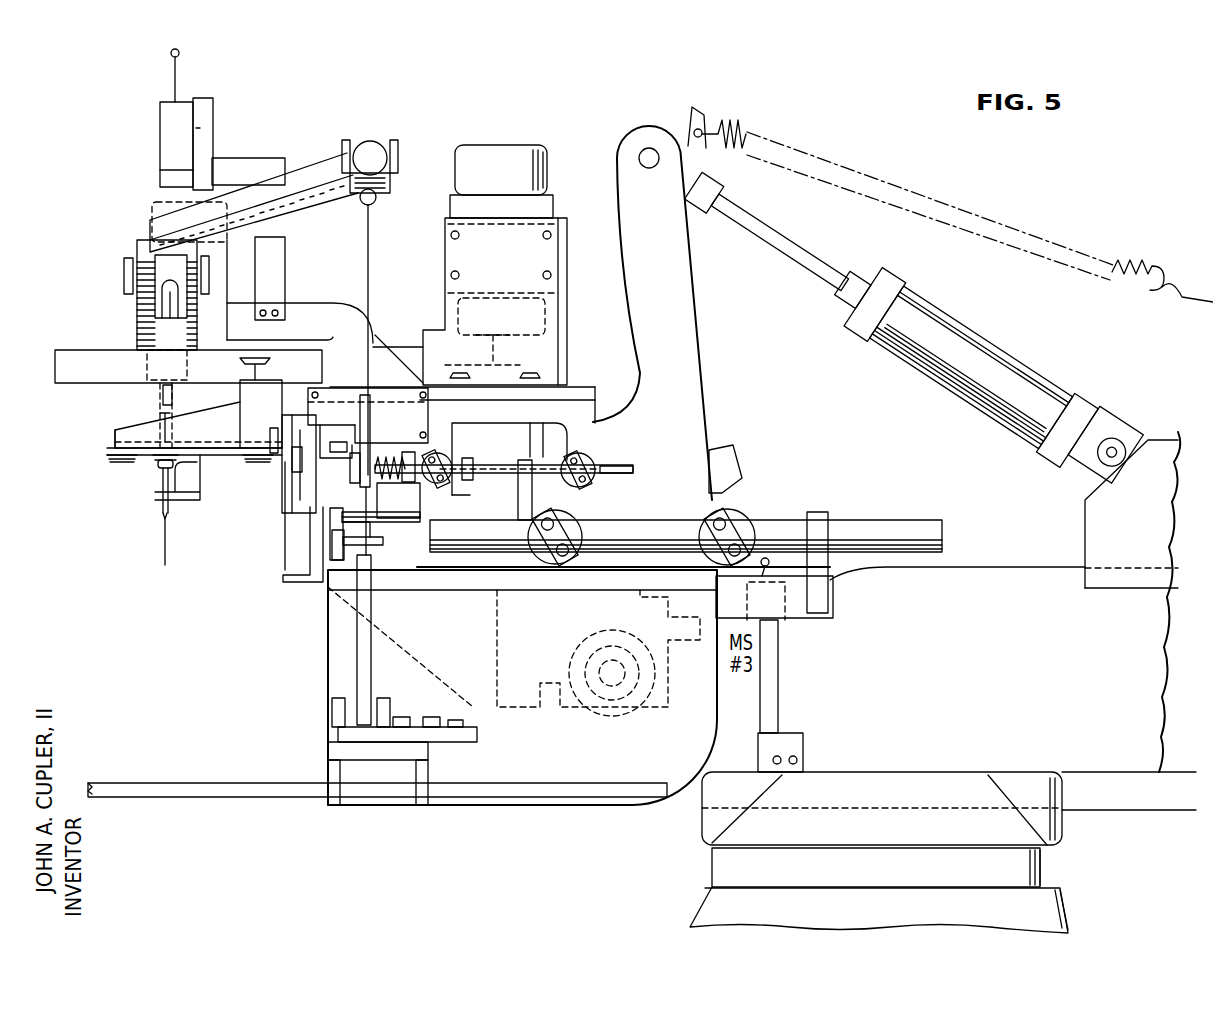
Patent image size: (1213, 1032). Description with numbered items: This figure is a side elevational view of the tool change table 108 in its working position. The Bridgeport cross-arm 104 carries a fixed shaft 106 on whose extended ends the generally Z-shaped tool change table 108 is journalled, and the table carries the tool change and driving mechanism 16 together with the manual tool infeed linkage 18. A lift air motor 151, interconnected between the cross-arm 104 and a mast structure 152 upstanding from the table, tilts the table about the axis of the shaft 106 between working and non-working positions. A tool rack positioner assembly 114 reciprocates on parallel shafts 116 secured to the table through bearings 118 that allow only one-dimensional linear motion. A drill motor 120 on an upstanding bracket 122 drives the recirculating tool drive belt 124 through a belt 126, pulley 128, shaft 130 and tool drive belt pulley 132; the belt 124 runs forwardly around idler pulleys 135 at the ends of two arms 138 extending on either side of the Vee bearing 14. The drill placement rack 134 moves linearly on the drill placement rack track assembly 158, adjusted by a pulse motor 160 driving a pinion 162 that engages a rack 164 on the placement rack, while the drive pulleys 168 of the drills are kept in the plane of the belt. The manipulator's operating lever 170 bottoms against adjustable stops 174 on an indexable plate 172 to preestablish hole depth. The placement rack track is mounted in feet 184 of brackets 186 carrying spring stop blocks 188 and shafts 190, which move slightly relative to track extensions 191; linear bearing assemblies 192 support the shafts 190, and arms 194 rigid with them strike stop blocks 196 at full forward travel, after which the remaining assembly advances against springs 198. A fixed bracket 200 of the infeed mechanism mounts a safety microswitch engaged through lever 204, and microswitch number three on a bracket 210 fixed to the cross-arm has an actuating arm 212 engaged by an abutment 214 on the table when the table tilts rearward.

The Vee bearing 14 is at (198, 488).
The tool change and driving mechanism 16 is at (65, 280).
The manual tool infeed linkage 18 is at (307, 143).
The Bridgeport cross-arm 104 is at (1005, 685).
The fixed shaft 106 is at (615, 667).
The tool change table 108 is at (475, 644).
The tool rack positioner assembly 114 is at (618, 483).
The parallel shafts 116 is at (868, 534).
The bearings 118 is at (563, 565).
The drill motor 120 is at (511, 151).
The bracket 122 is at (517, 263).
The recirculating tool drive belt 124 is at (223, 436).
The belt 126 is at (385, 354).
The pulley 128 is at (240, 364).
The shaft 130 is at (235, 382).
The tool drive belt pulley 132 is at (240, 460).
The drill placement rack 134 is at (298, 496).
The idler pulleys 135 is at (114, 460).
The arms 138 is at (123, 430).
The lift air motor 151 is at (1025, 352).
The mast structure 152 is at (620, 129).
The drill placement rack track assembly 158 is at (281, 587).
The pulse motor 160 is at (508, 457).
The pinion 162 is at (292, 472).
The rack 164 is at (368, 423).
The drive pulleys 168 is at (274, 442).
The operating lever 170 is at (373, 600).
The indexable plate 172 is at (459, 737).
The adjustable stops 174 is at (430, 715).
The feet 184 is at (377, 518).
The brackets 186 is at (380, 498).
The spring stop blocks 188 is at (348, 466).
The shafts 190 is at (612, 467).
The track extensions 191 is at (378, 532).
The linear bearing assemblies 192 is at (440, 452).
The arms 194 is at (518, 504).
The stop blocks 196 is at (339, 555).
The springs 198 is at (389, 442).
The fixed bracket 200 is at (145, 244).
The lever 204 is at (313, 198).
The bracket 210 is at (779, 685).
The actuating arm 212 is at (764, 565).
The abutment 214 is at (730, 474).